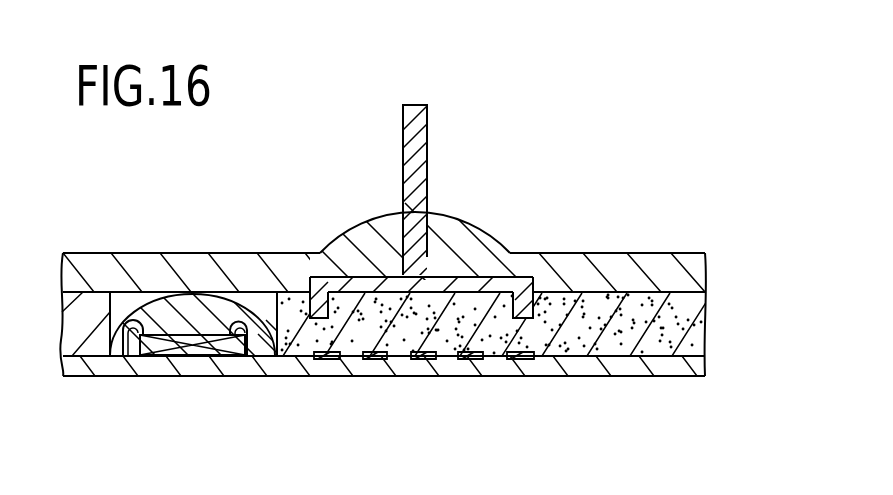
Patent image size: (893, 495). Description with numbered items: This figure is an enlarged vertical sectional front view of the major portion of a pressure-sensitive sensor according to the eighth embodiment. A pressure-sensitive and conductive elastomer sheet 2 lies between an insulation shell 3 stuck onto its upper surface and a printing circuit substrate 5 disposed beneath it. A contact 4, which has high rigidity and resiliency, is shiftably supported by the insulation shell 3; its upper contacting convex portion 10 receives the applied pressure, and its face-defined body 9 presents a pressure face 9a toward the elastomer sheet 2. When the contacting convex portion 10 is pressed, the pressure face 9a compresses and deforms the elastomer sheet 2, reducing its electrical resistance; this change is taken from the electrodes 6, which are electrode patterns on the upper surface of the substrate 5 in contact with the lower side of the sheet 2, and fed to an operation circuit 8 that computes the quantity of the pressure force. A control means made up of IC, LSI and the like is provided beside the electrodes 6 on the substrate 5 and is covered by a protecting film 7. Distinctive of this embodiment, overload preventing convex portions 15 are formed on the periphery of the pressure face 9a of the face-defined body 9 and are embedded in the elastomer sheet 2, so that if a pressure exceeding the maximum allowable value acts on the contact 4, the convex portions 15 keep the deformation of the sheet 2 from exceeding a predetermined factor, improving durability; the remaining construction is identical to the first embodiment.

The pressure-sensitive and conductive elastomer sheet 2 is at (687, 323).
The insulation shell 3 is at (692, 272).
The contact 4 is at (428, 183).
The printing circuit substrate 5 is at (695, 362).
The electrodes 6 is at (516, 362).
The protecting film 7 is at (113, 342).
The operation circuit 8 is at (208, 356).
The face-defined body 9 is at (356, 277).
The pressure face 9a is at (483, 297).
The contacting convex portion 10 is at (428, 120).
The overload preventing convex portions 15 is at (317, 320).